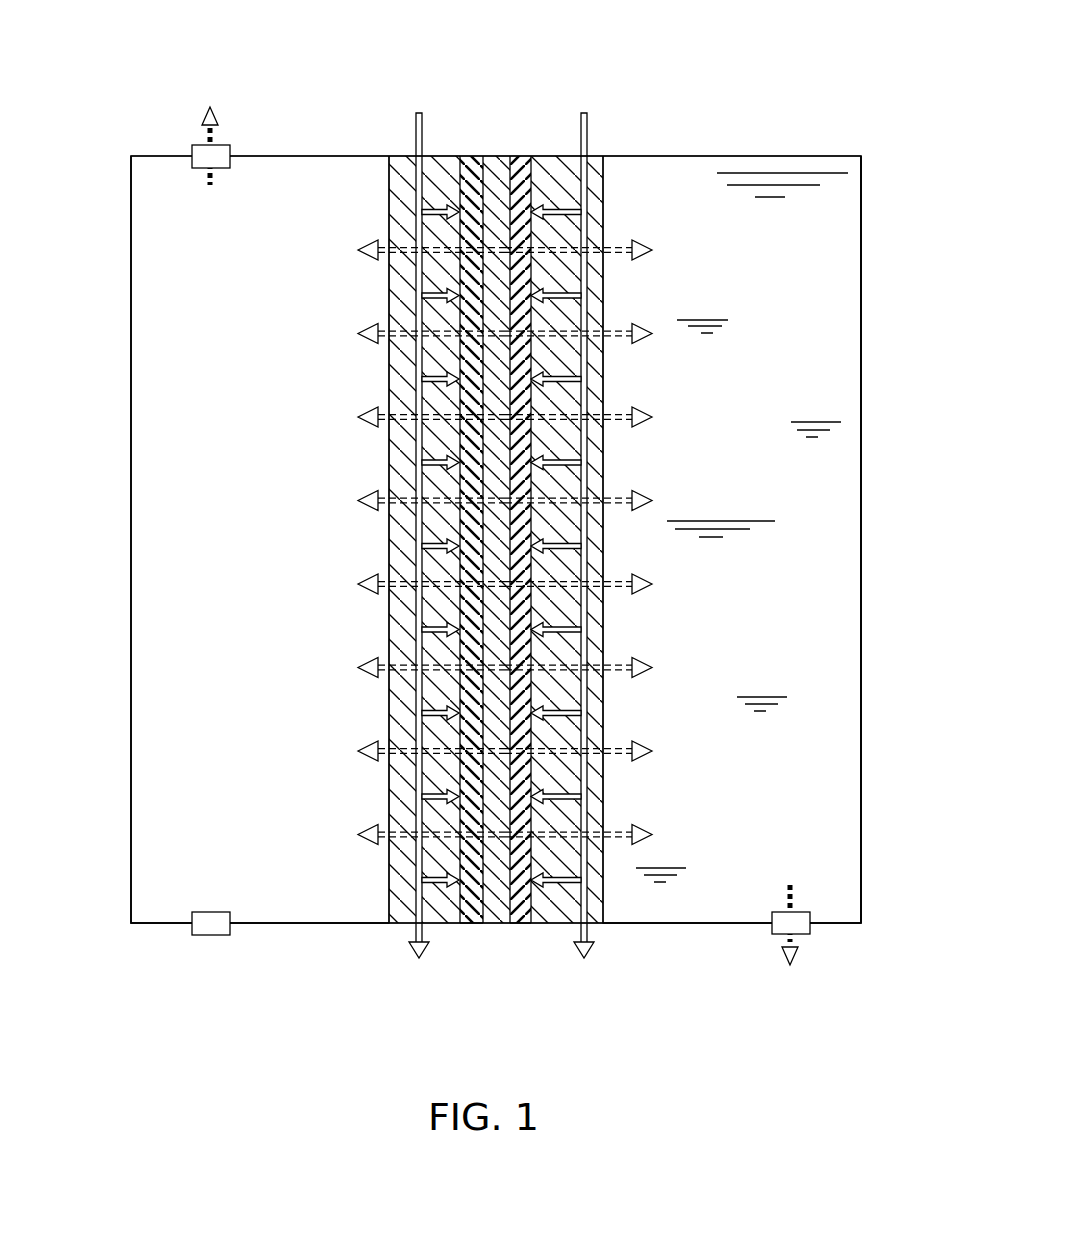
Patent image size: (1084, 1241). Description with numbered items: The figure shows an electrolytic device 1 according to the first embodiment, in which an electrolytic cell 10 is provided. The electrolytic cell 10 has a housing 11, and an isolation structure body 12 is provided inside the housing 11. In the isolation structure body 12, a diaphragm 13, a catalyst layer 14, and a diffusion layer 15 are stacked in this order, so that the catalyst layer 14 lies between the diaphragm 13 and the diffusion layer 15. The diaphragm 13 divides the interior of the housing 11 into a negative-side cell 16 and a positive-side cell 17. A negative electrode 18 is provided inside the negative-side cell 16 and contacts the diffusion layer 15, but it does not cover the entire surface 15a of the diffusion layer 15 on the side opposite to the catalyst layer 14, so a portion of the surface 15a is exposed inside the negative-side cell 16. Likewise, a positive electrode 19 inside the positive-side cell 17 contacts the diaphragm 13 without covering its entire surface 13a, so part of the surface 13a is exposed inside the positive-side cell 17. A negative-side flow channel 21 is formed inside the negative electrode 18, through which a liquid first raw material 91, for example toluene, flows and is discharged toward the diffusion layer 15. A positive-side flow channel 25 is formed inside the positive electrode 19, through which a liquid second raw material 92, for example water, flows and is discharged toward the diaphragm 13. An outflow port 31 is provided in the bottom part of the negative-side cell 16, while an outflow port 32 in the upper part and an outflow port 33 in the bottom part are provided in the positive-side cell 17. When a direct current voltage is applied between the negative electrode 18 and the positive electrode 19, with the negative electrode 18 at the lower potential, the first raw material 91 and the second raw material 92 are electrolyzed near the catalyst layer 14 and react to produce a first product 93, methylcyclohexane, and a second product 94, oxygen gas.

The electrolytic device 1 is at (767, 72).
The electrolytic cell 10 is at (798, 142).
The housing 11 is at (862, 205).
The isolation structure body 12 is at (499, 489).
The diaphragm 13 is at (471, 163).
The surface of the diaphragm 13a is at (467, 895).
The catalyst layer 14 is at (494, 165).
The diffusion layer 15 is at (532, 508).
The surface of the diffusion layer 15a is at (522, 895).
The negative-side cell 16 is at (835, 835).
The positive-side cell 17 is at (155, 838).
The negative electrode 18 is at (590, 284).
The positive electrode 19 is at (405, 293).
The negative-side flow channel 21 is at (630, 509).
The first raw material 91 is at (588, 186).
The positive-side flow channel 25 is at (378, 508).
The second raw material 92 is at (414, 195).
The outflow port 31 is at (811, 927).
The outflow port 32 is at (200, 145).
The outflow port 33 is at (195, 930).
The first product 93 is at (622, 243).
The second product 94 is at (218, 135).